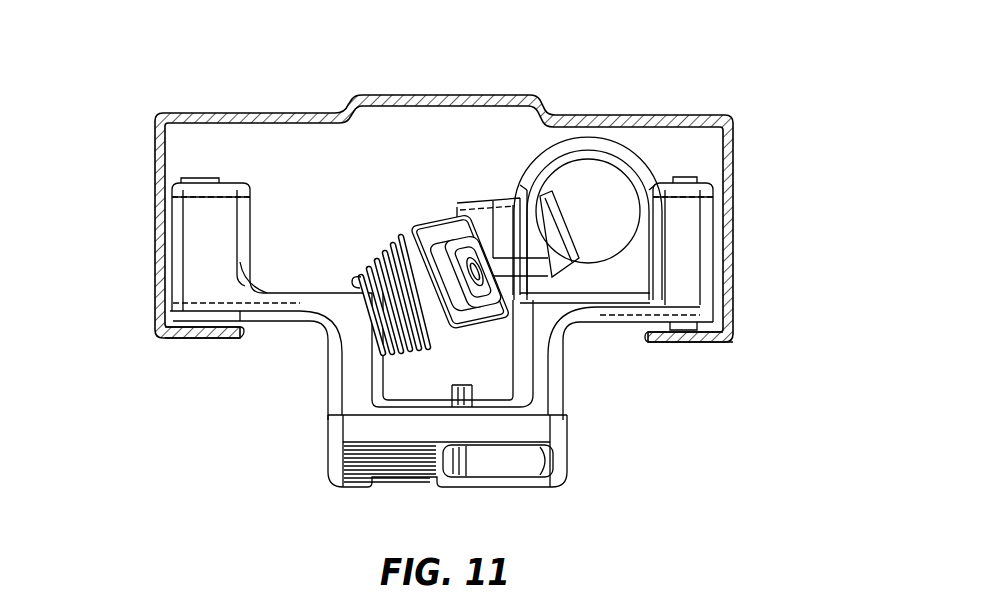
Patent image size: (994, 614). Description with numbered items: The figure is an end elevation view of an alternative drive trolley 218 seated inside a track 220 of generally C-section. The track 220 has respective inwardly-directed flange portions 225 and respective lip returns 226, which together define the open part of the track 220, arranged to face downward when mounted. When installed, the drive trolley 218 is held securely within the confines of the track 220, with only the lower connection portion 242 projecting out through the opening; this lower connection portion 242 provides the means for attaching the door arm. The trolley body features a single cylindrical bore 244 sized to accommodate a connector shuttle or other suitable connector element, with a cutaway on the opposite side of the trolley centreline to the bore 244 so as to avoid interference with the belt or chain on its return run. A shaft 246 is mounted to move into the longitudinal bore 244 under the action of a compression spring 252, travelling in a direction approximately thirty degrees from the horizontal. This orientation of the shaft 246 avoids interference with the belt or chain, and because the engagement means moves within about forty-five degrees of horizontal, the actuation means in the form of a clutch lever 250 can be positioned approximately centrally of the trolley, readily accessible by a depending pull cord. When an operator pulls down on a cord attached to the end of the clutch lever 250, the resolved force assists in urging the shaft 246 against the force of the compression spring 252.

The drive trolley 218 is at (504, 294).
The track 220 is at (573, 117).
The inwardly-directed flange portions 225 is at (208, 337).
The lip returns 226 is at (242, 325).
The lower connection portion 242 is at (355, 392).
The cylindrical bore 244 is at (600, 222).
The shaft 246 is at (548, 222).
The clutch lever 250 is at (420, 230).
The compression spring 252 is at (383, 263).